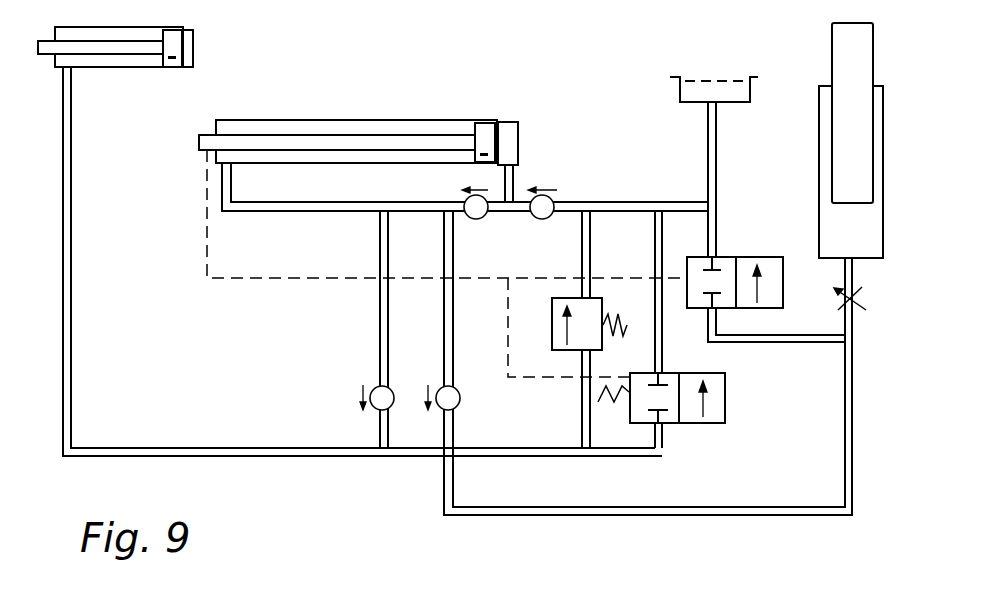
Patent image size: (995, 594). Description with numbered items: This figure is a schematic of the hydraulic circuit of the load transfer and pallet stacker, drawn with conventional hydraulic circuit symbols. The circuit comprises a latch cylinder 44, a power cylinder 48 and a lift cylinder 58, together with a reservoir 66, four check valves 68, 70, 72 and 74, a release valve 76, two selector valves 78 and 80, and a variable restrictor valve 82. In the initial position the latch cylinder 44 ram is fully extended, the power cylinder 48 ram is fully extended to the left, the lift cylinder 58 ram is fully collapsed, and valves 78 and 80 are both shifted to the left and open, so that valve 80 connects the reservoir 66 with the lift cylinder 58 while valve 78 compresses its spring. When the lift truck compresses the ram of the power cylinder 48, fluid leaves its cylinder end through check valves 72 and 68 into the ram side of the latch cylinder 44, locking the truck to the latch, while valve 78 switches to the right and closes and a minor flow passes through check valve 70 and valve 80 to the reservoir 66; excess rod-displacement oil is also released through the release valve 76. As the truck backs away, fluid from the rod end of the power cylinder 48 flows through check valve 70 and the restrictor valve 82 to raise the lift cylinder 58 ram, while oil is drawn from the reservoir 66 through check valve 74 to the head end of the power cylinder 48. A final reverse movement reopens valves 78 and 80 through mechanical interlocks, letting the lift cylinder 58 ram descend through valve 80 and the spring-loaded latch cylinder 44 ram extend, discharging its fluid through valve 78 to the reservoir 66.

The latch cylinder 44 is at (193, 36).
The power cylinder 48 is at (508, 122).
The lift cylinder 58 is at (820, 138).
The reservoir 66 is at (676, 86).
The check valve 68 is at (370, 407).
The check valve 70 is at (457, 408).
The check valve 72 is at (480, 221).
The check valve 74 is at (546, 221).
The release valve 76 is at (559, 348).
The selector valve 78 is at (727, 395).
The selector valve 80 is at (778, 257).
The variable restrictor valve 82 is at (862, 296).